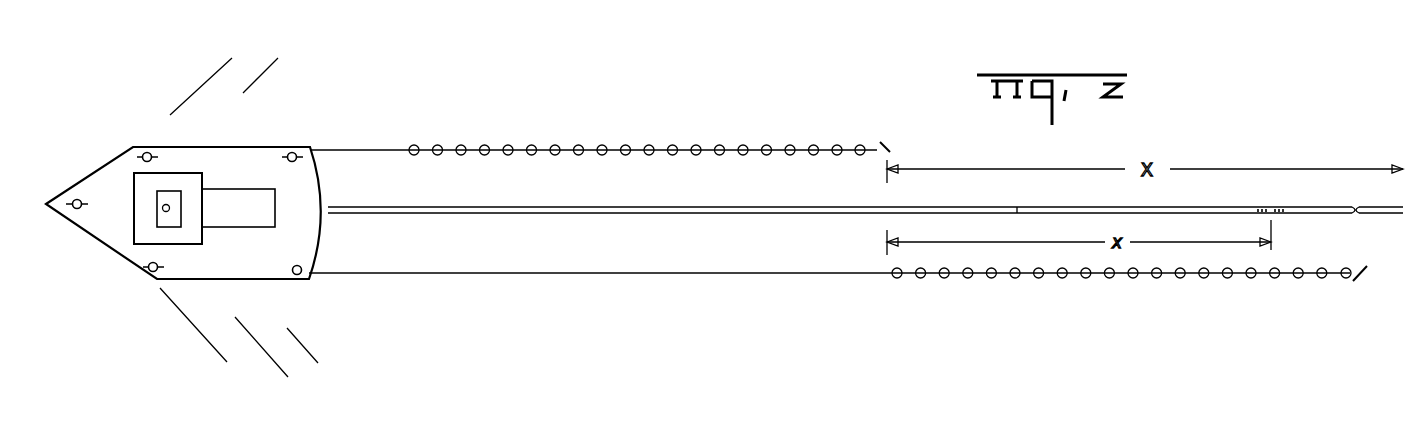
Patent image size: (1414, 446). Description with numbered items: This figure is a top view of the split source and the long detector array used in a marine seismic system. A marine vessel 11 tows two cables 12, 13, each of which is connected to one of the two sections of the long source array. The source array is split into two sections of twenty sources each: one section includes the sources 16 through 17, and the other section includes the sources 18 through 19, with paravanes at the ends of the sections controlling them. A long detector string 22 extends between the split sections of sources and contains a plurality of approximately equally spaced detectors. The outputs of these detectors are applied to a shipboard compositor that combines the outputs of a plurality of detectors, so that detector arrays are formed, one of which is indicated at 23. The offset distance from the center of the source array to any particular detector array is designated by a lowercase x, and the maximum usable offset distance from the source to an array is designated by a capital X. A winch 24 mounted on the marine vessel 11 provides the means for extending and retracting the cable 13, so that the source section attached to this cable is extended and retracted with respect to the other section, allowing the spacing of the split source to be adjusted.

The marine vessel 11 is at (213, 150).
The cable 12 is at (355, 150).
The cable 13 is at (373, 273).
The source 16 is at (415, 150).
The source 17 is at (860, 147).
The source 18 is at (897, 278).
The source 19 is at (1345, 278).
The long detector string 22 is at (842, 207).
The detector array 23 is at (1273, 207).
The winch 24 is at (297, 274).